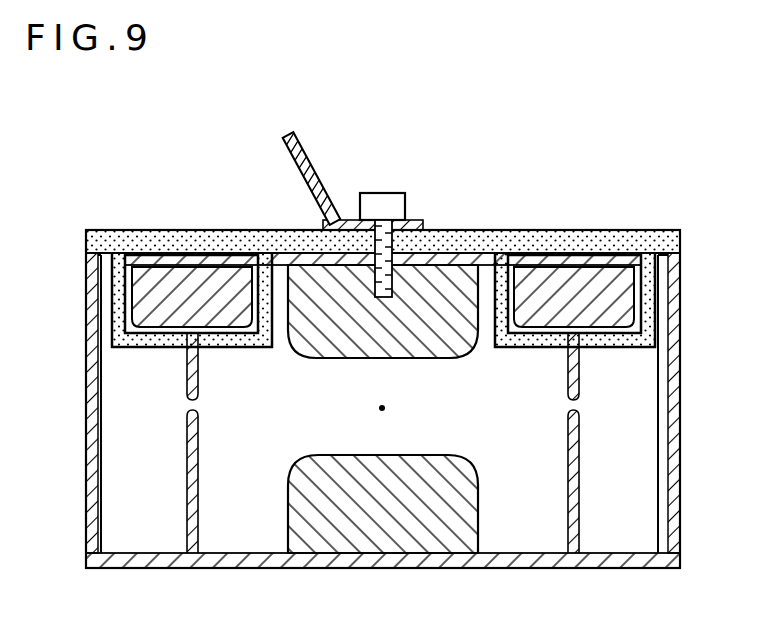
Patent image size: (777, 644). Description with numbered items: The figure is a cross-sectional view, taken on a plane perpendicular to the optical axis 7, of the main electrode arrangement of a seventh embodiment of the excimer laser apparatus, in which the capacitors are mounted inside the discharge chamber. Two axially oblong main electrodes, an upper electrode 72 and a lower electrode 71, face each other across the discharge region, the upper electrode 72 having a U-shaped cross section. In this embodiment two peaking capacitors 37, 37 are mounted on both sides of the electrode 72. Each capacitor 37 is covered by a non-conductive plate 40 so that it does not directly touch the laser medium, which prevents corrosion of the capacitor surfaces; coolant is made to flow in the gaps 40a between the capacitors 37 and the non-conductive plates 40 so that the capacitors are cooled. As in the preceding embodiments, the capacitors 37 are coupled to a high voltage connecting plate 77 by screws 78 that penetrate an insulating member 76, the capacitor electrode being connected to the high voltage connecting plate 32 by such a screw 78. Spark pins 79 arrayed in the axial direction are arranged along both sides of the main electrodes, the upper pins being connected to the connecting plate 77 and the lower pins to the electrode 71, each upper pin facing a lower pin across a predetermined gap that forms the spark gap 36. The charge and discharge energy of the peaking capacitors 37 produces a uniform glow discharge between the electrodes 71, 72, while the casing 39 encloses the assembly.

The optical axis 7 is at (380, 408).
The high voltage connecting plate 32 is at (313, 177).
The spark gap 36 is at (585, 410).
The peaking capacitor 37 is at (203, 275).
The housing 39 is at (678, 432).
The non-conductive plate 40 is at (117, 331).
The gap 40a is at (115, 279).
The electrode 71 is at (428, 530).
The electrode 72 is at (447, 275).
The insulating member 76 is at (537, 243).
The high voltage connecting plate 77 is at (607, 260).
The screw 78 is at (393, 193).
The spark pin 79 is at (582, 377).